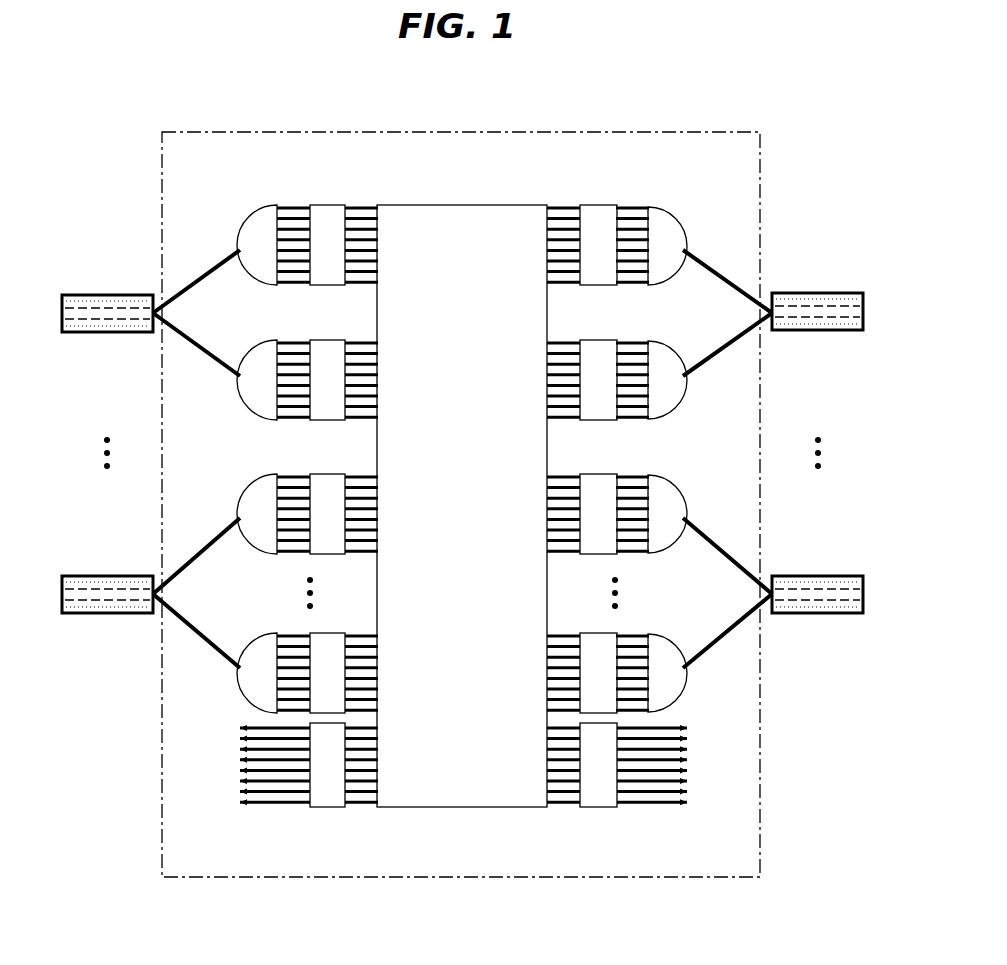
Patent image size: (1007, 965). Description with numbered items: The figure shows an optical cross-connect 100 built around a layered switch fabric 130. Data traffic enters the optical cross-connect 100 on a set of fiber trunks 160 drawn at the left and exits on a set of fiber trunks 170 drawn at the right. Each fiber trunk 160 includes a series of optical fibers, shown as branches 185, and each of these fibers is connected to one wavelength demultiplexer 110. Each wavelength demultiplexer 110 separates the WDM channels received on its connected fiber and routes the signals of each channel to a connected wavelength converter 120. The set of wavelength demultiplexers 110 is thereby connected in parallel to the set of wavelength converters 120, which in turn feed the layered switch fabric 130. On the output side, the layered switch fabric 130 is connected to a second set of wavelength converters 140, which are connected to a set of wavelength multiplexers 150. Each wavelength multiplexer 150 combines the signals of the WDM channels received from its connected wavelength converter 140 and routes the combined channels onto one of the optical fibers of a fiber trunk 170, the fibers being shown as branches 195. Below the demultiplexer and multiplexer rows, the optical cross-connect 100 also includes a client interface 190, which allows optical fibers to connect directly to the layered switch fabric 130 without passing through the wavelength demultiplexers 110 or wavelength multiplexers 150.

The optical cross-connect 100 is at (683, 132).
The wavelength demultiplexer 110 is at (253, 208).
The wavelength converter 120 is at (323, 205).
The layered switch fabric 130 is at (490, 205).
The wavelength converter 140 is at (597, 205).
The wavelength multiplexer 150 is at (648, 208).
The fiber trunk 160 is at (95, 295).
The fiber trunk 170 is at (838, 293).
The input fiber branches 185 is at (187, 290).
The client interface 190 is at (228, 723).
The output fiber branches 195 is at (738, 290).